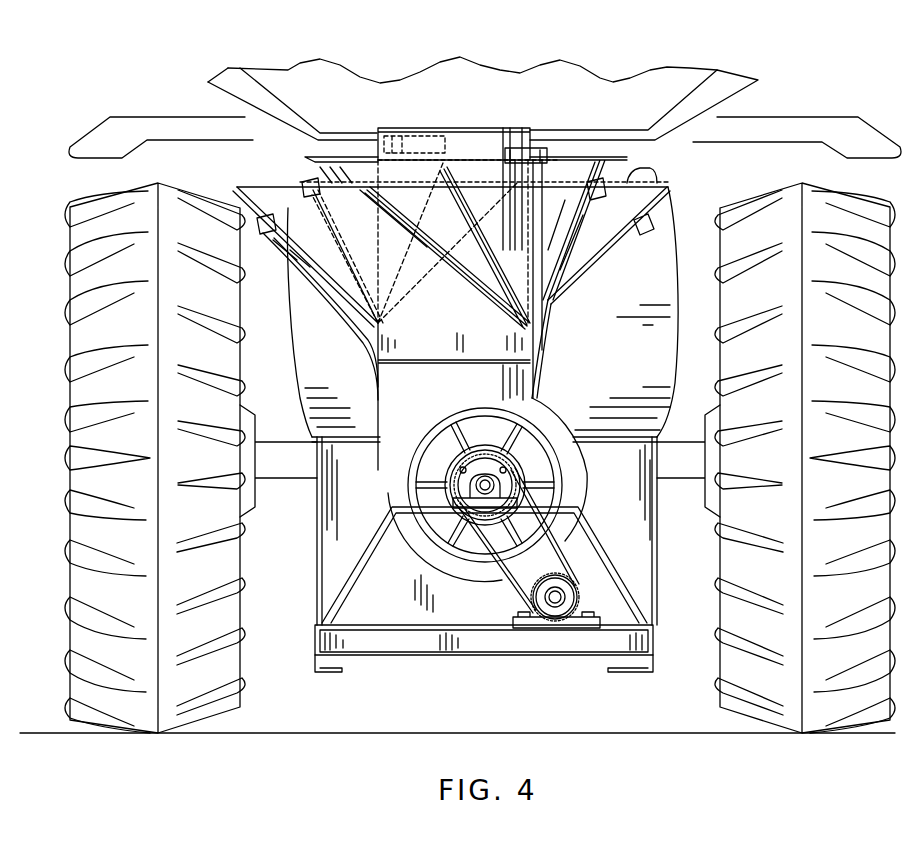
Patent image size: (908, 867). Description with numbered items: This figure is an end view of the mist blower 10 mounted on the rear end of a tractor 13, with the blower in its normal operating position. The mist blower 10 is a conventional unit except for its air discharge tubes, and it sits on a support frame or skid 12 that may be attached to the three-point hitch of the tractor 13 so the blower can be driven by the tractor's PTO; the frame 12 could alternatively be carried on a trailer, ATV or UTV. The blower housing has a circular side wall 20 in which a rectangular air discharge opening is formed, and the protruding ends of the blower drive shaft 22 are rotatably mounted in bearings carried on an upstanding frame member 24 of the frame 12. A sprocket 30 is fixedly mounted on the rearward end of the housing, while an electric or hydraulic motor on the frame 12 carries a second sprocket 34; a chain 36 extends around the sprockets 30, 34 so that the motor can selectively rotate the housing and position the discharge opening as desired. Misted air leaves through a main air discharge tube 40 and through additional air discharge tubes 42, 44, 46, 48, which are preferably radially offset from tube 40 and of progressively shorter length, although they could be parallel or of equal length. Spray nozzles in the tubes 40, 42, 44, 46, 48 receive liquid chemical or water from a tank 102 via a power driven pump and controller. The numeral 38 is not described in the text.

The mist blower 10 is at (572, 396).
The support frame 12 is at (408, 675).
The tractor 13 is at (748, 62).
The circular side wall 20 is at (570, 452).
The drive shaft 22 is at (512, 480).
The upstanding frame member 24 is at (357, 558).
The sprocket 30 is at (513, 480).
The sprocket 34 is at (553, 612).
The chain 36 is at (535, 580).
The body side panel 38 is at (280, 168).
The air discharge tube 40 is at (483, 125).
The air discharge tube 42 is at (352, 154).
The air discharge tube 44 is at (263, 175).
The air discharge tube 46 is at (564, 165).
The air discharge tube 48 is at (670, 178).
The tank 102 is at (688, 208).